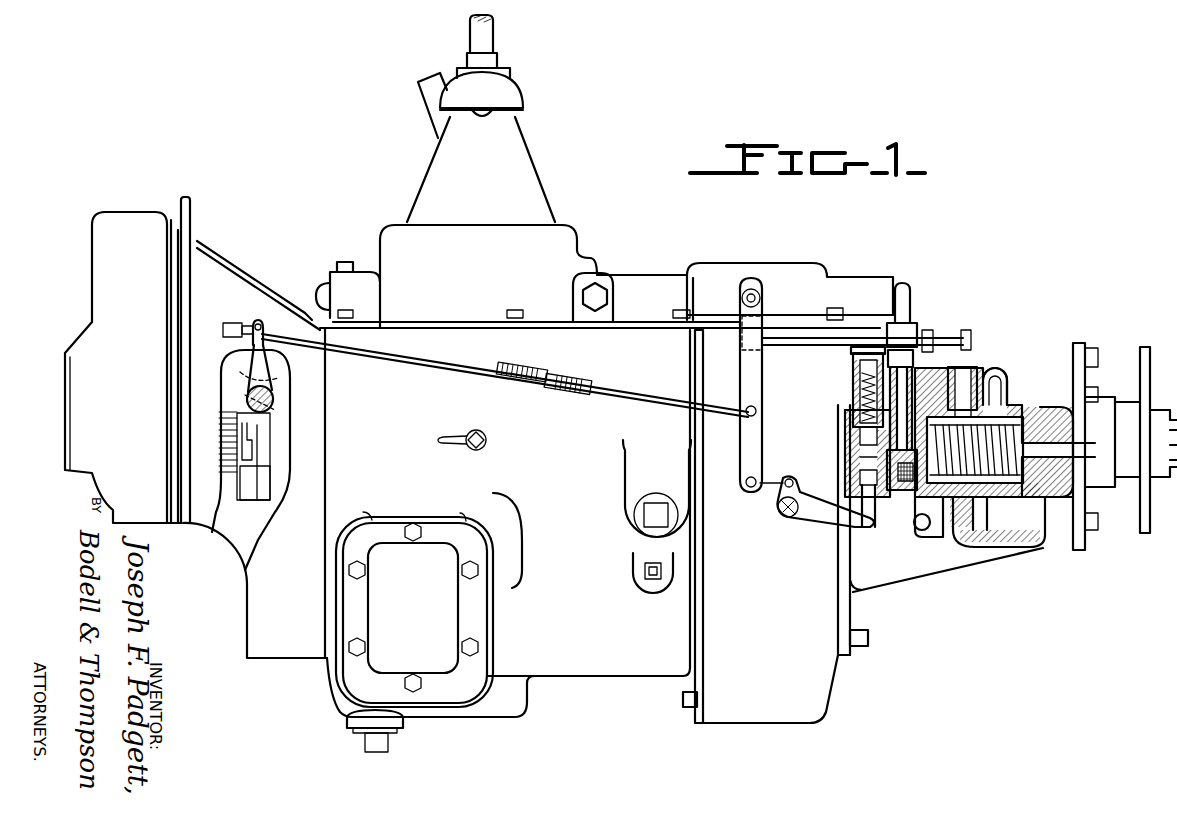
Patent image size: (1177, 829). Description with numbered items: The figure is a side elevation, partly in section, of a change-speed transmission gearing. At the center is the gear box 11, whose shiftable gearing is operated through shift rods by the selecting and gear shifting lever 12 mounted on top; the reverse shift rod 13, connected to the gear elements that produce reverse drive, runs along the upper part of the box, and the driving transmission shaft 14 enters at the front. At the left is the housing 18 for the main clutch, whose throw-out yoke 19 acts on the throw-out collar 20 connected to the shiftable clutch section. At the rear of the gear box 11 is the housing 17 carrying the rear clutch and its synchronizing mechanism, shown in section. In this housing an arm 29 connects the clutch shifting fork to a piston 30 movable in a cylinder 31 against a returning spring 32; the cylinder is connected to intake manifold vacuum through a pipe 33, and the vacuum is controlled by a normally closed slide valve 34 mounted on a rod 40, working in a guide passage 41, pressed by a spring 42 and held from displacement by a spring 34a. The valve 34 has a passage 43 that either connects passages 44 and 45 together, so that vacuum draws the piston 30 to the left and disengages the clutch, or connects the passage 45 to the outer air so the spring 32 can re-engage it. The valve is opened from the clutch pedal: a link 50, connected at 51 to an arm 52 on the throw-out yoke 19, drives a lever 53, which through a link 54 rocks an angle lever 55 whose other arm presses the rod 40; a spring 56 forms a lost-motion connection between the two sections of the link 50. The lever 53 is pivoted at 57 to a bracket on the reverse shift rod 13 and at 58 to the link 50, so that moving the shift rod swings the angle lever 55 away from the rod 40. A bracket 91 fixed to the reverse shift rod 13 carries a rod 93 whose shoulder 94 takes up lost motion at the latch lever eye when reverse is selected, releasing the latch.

The gear box 11 is at (623, 667).
The selecting and gear shifting lever 12 is at (487, 38).
The reverse shift rod 13 is at (710, 288).
The driving transmission shaft 14 is at (282, 448).
The housing 17 is at (957, 562).
The main clutch housing 18 is at (193, 237).
The throw-out yoke 19 is at (233, 370).
The throw-out collar 20 is at (248, 493).
The arm 29 is at (1013, 415).
The piston 30 is at (972, 377).
The cylinder 31 is at (1002, 375).
The returning spring 32 is at (940, 417).
The pipe 33 is at (912, 297).
The valve 34 is at (845, 427).
The spring 34a is at (845, 457).
The rod 40 is at (870, 503).
The guide passage 41 is at (847, 477).
The spring 42 is at (862, 375).
The passage 43 is at (850, 450).
The passage 44 is at (905, 472).
The passage 45 is at (893, 462).
The link 50 is at (418, 360).
The connection 51 is at (258, 323).
The arm 52 is at (273, 368).
The lever 53 is at (758, 377).
The link 54 is at (770, 485).
The angle lever 55 is at (800, 517).
The spring 56 is at (533, 368).
The pivot 57 is at (762, 298).
The pivot 58 is at (758, 410).
The bracket 91 is at (753, 285).
The rod 93 is at (855, 337).
The shoulder 94 is at (967, 333).